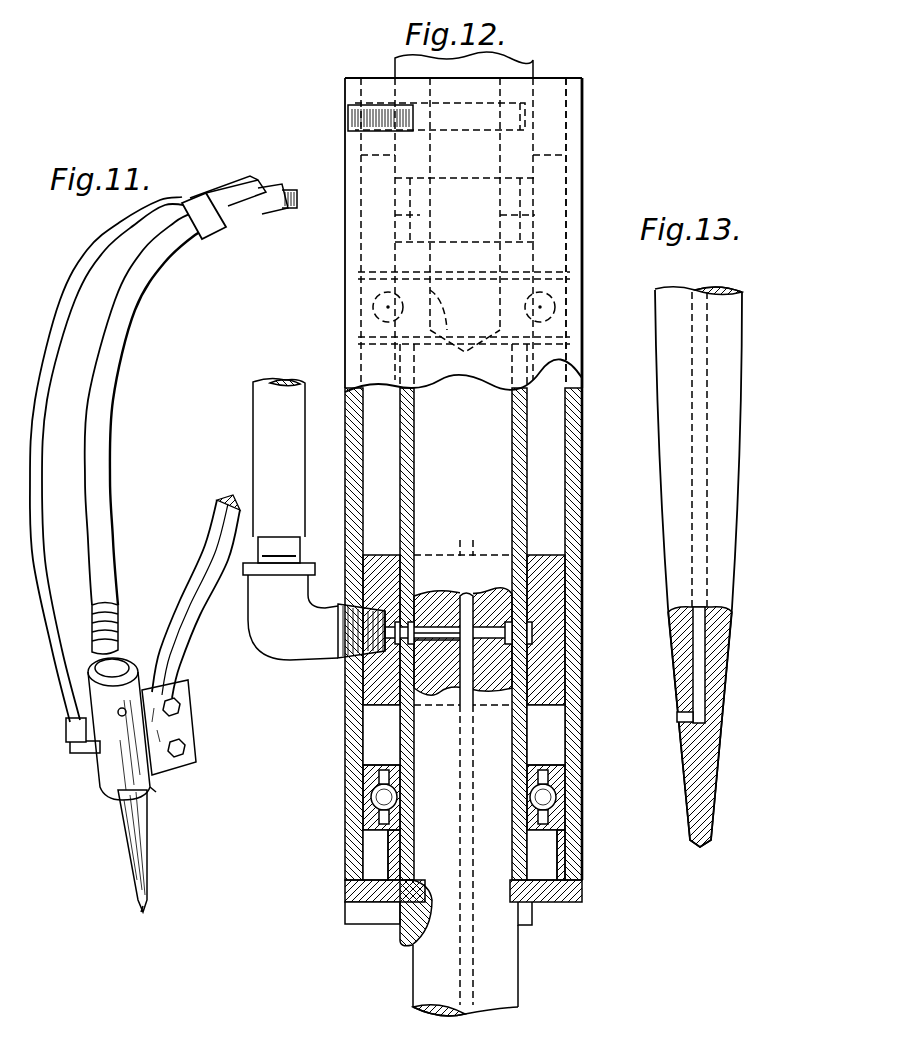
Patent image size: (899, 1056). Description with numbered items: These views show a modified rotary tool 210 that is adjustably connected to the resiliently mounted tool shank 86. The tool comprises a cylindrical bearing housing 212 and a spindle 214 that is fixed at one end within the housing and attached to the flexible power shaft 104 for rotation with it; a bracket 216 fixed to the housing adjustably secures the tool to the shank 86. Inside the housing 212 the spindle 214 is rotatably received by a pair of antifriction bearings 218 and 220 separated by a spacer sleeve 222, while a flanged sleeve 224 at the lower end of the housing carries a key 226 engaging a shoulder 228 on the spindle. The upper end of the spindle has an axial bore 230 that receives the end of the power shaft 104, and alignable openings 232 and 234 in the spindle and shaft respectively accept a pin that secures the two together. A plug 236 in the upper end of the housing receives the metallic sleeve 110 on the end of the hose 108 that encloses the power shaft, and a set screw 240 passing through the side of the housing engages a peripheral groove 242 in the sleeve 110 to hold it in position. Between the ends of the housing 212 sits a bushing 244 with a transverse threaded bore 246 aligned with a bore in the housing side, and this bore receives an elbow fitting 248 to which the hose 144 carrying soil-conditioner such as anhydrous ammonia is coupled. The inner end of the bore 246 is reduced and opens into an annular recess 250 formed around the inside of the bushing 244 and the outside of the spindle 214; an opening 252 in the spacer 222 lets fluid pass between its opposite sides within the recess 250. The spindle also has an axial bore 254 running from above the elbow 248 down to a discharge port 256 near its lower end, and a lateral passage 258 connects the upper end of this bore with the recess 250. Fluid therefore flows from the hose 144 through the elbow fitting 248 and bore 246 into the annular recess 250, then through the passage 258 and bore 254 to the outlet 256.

In FIG. 11, the tool shank 86 is at (204, 522).
In FIG. 11, the flexible power shaft 104 is at (277, 190).
In FIG. 11, the hose 108 is at (106, 412).
In FIG. 12, the metallic sleeve 110 is at (533, 68).
In FIG. 11, the metallic sleeve 110 is at (120, 628).
In FIG. 12, the hose 144 is at (275, 405).
In FIG. 11, the hose 144 is at (115, 258).
In FIG. 11, the rotary tool 210 is at (152, 790).
In FIG. 12, the cylindrical bearing housing 212 is at (568, 598).
In FIG. 11, the cylindrical bearing housing 212 is at (100, 776).
In FIG. 12, the spindle 214 is at (420, 988).
In FIG. 11, the spindle 214 is at (135, 872).
In FIG. 13, the spindle 214 is at (725, 456).
In FIG. 11, the bracket 216 is at (188, 734).
In FIG. 12, the antifriction bearing 218 is at (548, 345).
In FIG. 12, the antifriction bearing 220 is at (578, 805).
In FIG. 12, the spacer sleeve 222 is at (527, 503).
In FIG. 12, the flanged sleeve 224 is at (565, 900).
In FIG. 12, the key 226 is at (355, 920).
In FIG. 12, the shoulder 228 is at (518, 915).
In FIG. 12, the axial bore 230 is at (452, 330).
In FIG. 12, the opening 232 is at (415, 240).
In FIG. 12, the opening 234 is at (475, 230).
In FIG. 12, the plug 236 is at (375, 78).
In FIG. 12, the set screw 240 is at (365, 104).
In FIG. 12, the peripheral groove 242 is at (545, 115).
In FIG. 12, the bushing 244 is at (552, 650).
In FIG. 12, the transverse threaded bore 246 is at (365, 628).
In FIG. 12, the elbow fitting 248 is at (280, 653).
In FIG. 12, the annular recess 250 is at (356, 658).
In FIG. 12, the opening 252 is at (425, 612).
In FIG. 12, the axial bore 254 is at (470, 560).
In FIG. 13, the axial bore 254 is at (702, 650).
In FIG. 11, the discharge port 256 is at (146, 900).
In FIG. 13, the discharge port 256 is at (678, 716).
In FIG. 12, the lateral passage 258 is at (440, 640).